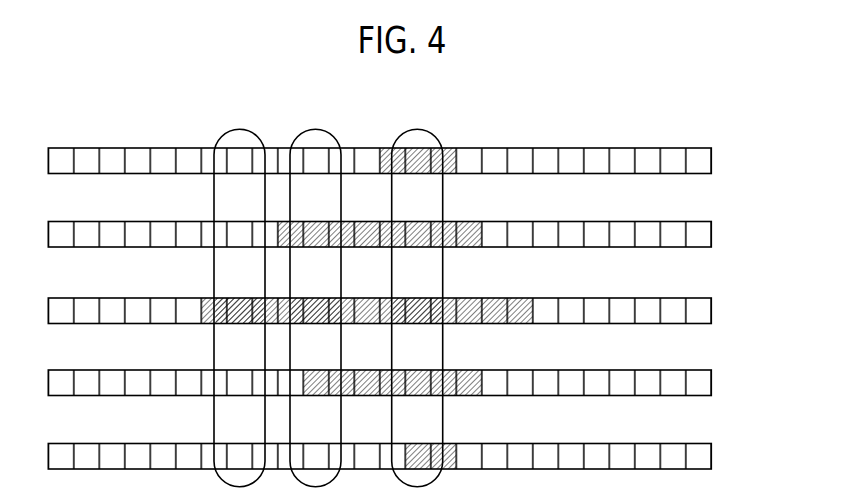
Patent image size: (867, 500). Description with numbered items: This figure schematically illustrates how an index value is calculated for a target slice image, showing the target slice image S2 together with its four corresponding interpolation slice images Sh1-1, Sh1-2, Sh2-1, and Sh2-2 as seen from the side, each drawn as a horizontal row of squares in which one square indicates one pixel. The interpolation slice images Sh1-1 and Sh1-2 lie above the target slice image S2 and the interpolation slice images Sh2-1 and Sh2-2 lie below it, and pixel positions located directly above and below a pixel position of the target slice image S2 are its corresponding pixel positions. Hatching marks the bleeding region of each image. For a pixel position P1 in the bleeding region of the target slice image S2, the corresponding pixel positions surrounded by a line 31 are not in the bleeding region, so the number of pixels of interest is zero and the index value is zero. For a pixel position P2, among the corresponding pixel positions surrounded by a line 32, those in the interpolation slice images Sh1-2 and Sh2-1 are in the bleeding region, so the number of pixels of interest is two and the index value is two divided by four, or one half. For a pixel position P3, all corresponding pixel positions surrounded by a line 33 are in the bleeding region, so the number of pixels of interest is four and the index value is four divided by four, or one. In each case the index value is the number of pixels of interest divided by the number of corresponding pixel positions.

The line 31 is at (244, 127).
The line 32 is at (320, 127).
The line 33 is at (421, 127).
The pixel position P1 is at (241, 297).
The pixel position P2 is at (318, 297).
The pixel position P3 is at (418, 297).
The interpolation slice image Sh1-1 is at (711, 161).
The interpolation slice image Sh1-2 is at (711, 234).
The target slice image S2 is at (711, 311).
The interpolation slice image Sh2-1 is at (711, 383).
The interpolation slice image Sh2-2 is at (711, 456).